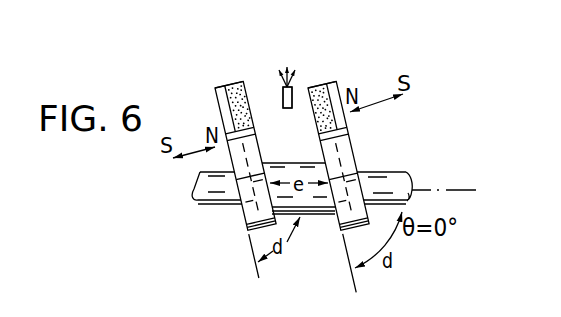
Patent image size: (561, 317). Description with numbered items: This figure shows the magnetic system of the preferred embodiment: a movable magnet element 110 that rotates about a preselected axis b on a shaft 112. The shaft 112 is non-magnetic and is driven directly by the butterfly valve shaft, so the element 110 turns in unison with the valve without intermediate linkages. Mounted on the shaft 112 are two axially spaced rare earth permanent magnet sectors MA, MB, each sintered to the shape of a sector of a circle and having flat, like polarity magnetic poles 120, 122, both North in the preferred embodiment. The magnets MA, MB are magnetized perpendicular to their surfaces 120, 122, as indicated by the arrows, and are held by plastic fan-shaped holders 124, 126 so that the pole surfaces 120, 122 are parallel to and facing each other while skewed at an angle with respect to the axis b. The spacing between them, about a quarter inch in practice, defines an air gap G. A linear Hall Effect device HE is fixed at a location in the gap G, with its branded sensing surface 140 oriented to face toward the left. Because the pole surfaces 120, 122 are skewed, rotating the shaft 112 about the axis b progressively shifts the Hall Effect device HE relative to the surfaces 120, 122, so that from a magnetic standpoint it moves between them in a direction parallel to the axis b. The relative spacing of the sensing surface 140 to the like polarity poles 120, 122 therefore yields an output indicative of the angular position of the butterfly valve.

The movable magnet element 110 is at (303, 243).
The shaft 112 is at (397, 172).
The magnetic pole 120 is at (253, 114).
The magnetic pole 122 is at (319, 138).
The fan-shaped holder 124 is at (247, 217).
The fan-shaped holder 126 is at (356, 168).
The sensing surface 140 is at (281, 87).
The Hall Effect device HE is at (298, 87).
The permanent magnet sector MA is at (231, 80).
The permanent magnet sector MB is at (320, 85).
The air gap G is at (315, 208).
The axis b is at (472, 190).